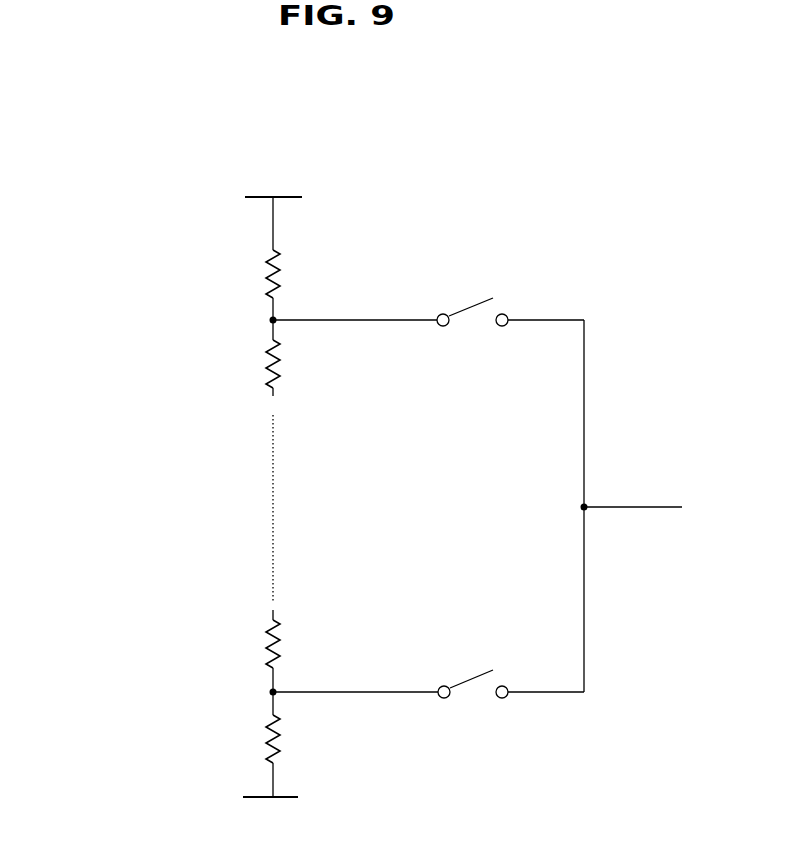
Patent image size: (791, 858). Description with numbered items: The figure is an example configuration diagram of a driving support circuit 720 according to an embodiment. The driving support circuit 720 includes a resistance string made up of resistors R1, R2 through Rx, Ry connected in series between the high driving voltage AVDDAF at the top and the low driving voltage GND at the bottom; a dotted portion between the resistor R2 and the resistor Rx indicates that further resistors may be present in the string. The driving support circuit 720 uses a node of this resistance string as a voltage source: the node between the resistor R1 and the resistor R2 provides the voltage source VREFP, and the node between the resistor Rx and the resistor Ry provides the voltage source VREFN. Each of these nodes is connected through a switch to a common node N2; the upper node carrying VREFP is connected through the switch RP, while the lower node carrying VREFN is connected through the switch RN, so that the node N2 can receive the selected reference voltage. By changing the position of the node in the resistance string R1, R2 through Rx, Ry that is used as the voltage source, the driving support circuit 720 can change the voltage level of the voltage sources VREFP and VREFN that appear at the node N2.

The driving support circuit 720 is at (747, 250).
The resistance string resistor R1 is at (236, 274).
The resistance string resistor R2 is at (236, 364).
The resistance string resistor Rx is at (240, 644).
The resistance string resistor Ry is at (240, 739).
The switch RP is at (510, 290).
The switch RN is at (511, 662).
The node N2 is at (632, 506).
The voltage source VREFP is at (238, 317).
The voltage source VREFN is at (238, 692).
The high driving voltage AVDDAF is at (273, 202).
The low driving voltage GND is at (270, 801).